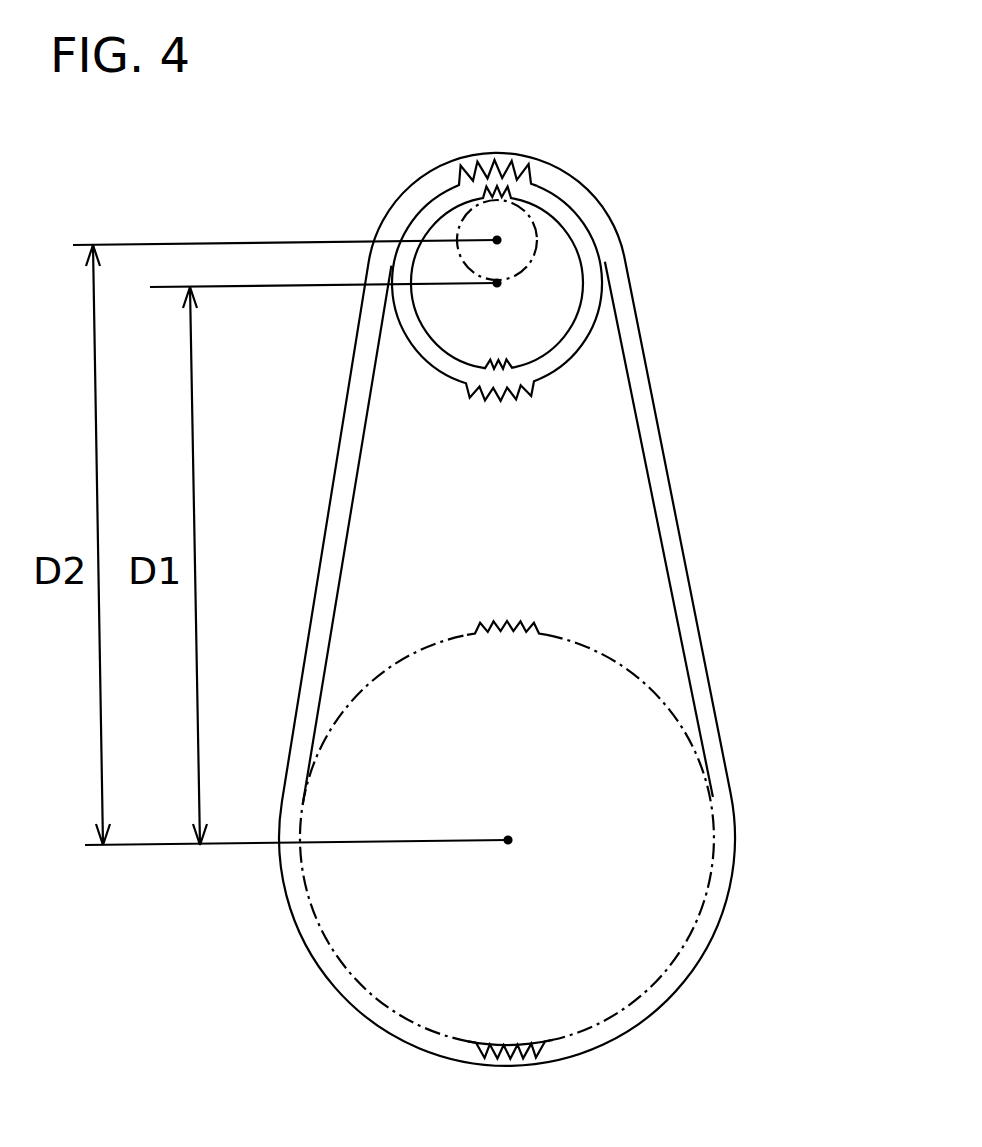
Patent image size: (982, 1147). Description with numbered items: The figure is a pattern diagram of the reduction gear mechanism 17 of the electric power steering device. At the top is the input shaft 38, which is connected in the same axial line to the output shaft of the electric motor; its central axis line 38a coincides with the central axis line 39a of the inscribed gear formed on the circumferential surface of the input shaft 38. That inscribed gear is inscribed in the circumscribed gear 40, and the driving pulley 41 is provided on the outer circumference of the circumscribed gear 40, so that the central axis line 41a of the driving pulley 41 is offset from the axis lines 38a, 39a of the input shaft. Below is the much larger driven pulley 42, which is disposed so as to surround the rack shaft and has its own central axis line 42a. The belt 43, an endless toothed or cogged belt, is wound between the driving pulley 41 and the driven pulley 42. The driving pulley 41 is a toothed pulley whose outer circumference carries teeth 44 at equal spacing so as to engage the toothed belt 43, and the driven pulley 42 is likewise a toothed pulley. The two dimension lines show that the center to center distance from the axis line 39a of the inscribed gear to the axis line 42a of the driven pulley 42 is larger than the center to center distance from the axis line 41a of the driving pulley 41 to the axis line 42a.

The reduction gear mechanism 17 is at (714, 502).
The input shaft 38 is at (468, 208).
The central axis line of the input shaft 38a is at (497, 240).
The central axis line of the inscribed gear 39a is at (497, 240).
The circumscribed gear 40 is at (556, 336).
The driving pulley 41 is at (562, 350).
The central axis line of the driving pulley 41a is at (500, 280).
The driven pulley 42 is at (715, 905).
The central axis line of the driven pulley 42a is at (510, 839).
The belt 43 is at (690, 578).
The teeth 44 is at (473, 404).